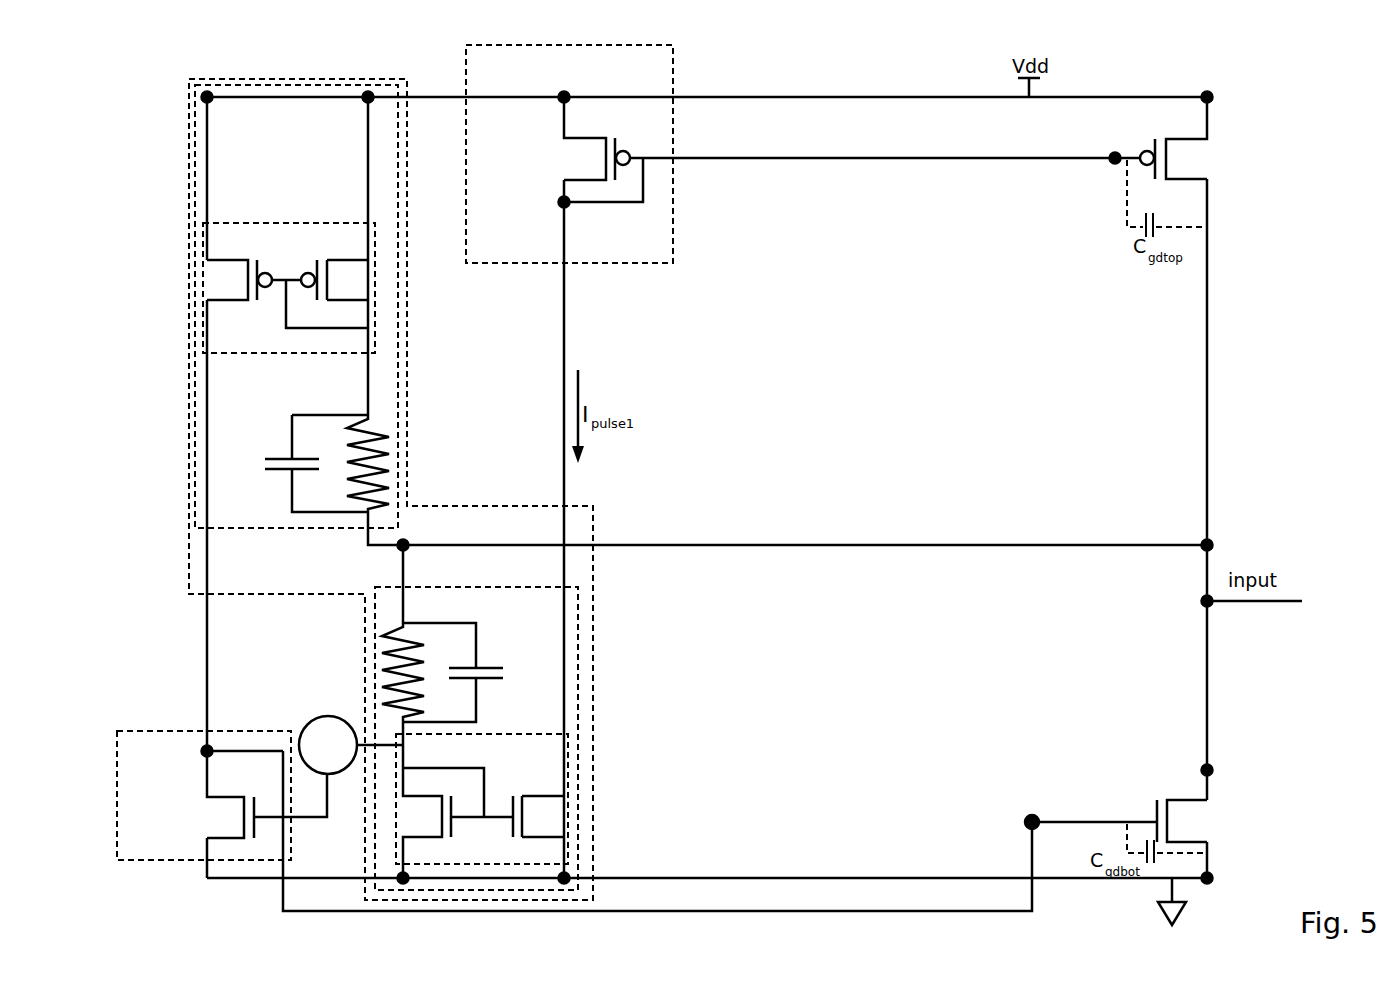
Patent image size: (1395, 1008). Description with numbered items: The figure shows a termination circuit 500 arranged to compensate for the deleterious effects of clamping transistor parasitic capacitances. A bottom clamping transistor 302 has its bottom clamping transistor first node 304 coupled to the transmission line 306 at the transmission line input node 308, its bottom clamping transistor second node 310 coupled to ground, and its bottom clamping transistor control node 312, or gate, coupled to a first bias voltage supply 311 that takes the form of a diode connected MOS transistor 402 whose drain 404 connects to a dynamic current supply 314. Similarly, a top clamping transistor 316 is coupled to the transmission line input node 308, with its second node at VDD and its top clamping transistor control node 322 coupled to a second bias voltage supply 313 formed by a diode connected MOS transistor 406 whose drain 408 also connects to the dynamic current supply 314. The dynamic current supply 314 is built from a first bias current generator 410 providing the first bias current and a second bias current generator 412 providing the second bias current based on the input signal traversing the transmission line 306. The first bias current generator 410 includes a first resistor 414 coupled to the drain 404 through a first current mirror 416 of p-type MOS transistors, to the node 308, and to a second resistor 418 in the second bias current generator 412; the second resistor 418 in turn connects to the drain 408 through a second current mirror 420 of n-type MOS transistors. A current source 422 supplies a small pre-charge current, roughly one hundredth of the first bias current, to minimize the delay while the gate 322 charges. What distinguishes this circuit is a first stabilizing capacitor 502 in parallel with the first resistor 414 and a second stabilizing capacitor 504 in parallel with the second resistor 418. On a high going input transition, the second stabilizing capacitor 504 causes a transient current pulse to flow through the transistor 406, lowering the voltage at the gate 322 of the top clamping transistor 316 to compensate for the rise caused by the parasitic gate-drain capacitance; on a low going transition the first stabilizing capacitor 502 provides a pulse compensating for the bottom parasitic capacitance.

The bottom clamping transistor 302 is at (1192, 802).
The bottom clamping transistor first node 304 is at (1209, 768).
The transmission line 306 is at (1247, 605).
The transmission line input node 308 is at (1204, 542).
The bottom clamping transistor second node 310 is at (1210, 878).
The first bias voltage supply 311 is at (178, 730).
The bottom clamping transistor control node 312 is at (1127, 820).
The second bias voltage supply 313 is at (676, 213).
The dynamic current supply 314 is at (597, 507).
The top clamping transistor 316 is at (1192, 140).
The top clamping transistor control node 322 is at (1112, 160).
The diode connected MOS transistor 402 is at (228, 797).
The drain 404 is at (203, 752).
The diode connected MOS transistor 406 is at (578, 137).
The drain 408 is at (562, 207).
The first bias current generator 410 is at (247, 530).
The second bias current generator 412 is at (537, 587).
The first resistor 414 is at (366, 434).
The first current mirror 416 is at (288, 357).
The second resistor 418 is at (412, 658).
The second current mirror 420 is at (483, 803).
The current source 422 is at (328, 766).
The termination circuit 500 is at (1257, 484).
The first stabilizing capacitor 502 is at (284, 456).
The second stabilizing capacitor 504 is at (485, 664).